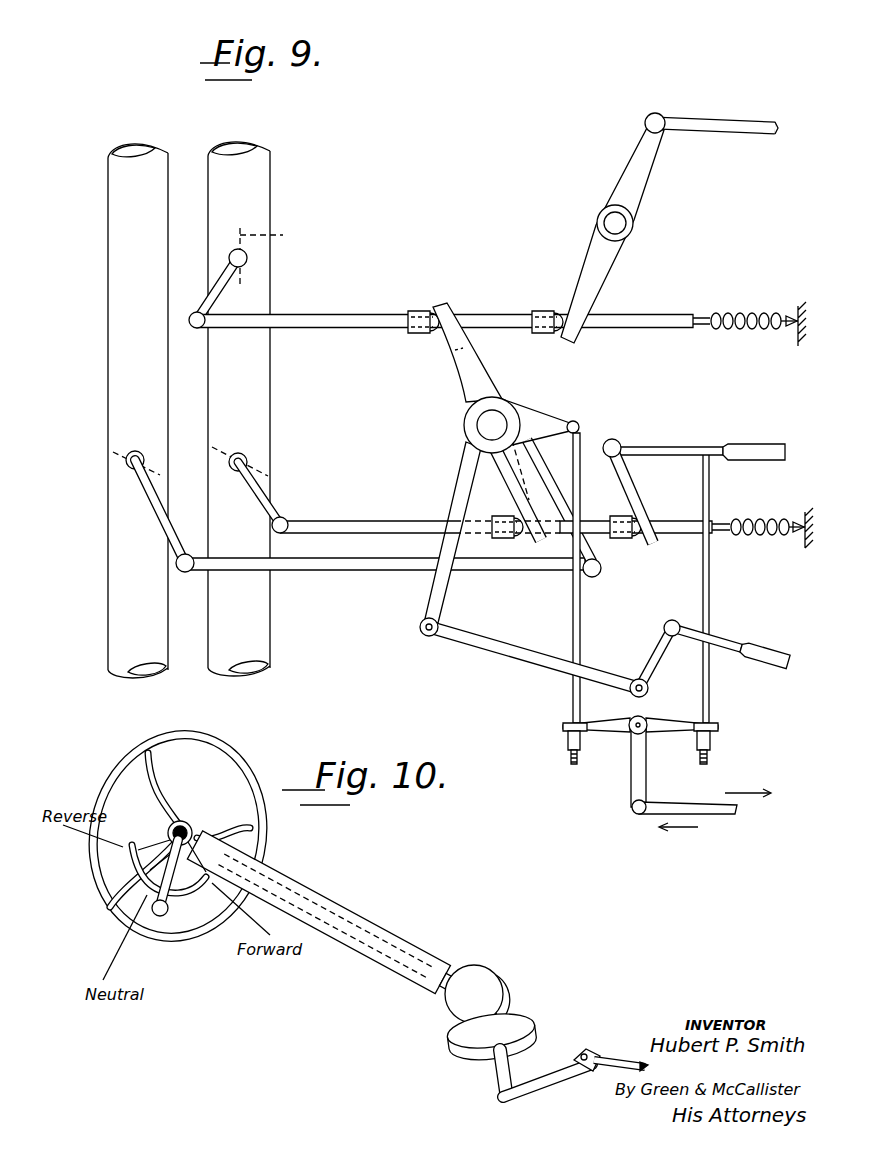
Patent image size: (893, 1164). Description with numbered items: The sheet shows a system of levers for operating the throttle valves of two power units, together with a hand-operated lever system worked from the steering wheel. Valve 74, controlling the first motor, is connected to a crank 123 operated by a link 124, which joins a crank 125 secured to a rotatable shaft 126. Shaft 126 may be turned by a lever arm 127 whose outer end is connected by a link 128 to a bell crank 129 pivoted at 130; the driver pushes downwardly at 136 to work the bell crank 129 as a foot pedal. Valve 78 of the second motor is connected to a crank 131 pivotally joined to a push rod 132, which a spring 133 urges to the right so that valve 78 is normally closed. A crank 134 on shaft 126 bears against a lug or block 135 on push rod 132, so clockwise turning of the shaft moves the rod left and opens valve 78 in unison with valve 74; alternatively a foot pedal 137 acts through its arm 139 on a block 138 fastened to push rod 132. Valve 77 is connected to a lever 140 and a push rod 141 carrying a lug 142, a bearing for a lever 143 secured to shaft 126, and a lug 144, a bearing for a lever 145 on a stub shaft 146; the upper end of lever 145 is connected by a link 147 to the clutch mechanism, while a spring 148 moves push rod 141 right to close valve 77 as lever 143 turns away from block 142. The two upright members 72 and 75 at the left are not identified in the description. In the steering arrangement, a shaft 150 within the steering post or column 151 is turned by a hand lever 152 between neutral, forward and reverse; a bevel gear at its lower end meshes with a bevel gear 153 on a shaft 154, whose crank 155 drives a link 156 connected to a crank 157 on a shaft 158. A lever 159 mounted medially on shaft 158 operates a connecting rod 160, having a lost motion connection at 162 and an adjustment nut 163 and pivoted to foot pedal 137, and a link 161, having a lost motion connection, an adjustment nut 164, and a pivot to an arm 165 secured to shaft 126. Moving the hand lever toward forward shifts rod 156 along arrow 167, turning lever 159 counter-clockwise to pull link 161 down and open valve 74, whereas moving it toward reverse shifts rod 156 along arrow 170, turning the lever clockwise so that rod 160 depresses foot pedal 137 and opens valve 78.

In FIG. 9, the left column 72 is at (107, 582).
In FIG. 9, the valve 74 is at (120, 452).
In FIG. 9, the right column 75 is at (272, 198).
In FIG. 9, the valve 77 is at (277, 258).
In FIG. 9, the valve 78 is at (248, 459).
In FIG. 9, the crank 123 is at (177, 538).
In FIG. 9, the link 124 is at (357, 569).
In FIG. 9, the crank 125 is at (587, 549).
In FIG. 9, the rotatable shaft 126 is at (496, 422).
In FIG. 9, the lever arm 127 is at (470, 487).
In FIG. 9, the link 128 is at (510, 653).
In FIG. 9, the bell crank 129 is at (646, 657).
In FIG. 9, the pivot 130 is at (678, 611).
In FIG. 9, the crank 131 is at (274, 508).
In FIG. 9, the push rod 132 is at (373, 522).
In FIG. 9, the spring 133 is at (770, 510).
In FIG. 9, the crank 134 is at (543, 537).
In FIG. 9, the lug or block 135 is at (520, 513).
In FIG. 9, the pressing point on bell crank 136 is at (790, 650).
In FIG. 9, the foot pedal 137 is at (686, 446).
In FIG. 9, the block or lug 138 is at (622, 517).
In FIG. 9, the arm 139 is at (635, 498).
In FIG. 9, the lever 140 is at (210, 305).
In FIG. 9, the push rod 141 is at (347, 316).
In FIG. 9, the lug 142 is at (419, 311).
In FIG. 9, the lever 143 is at (462, 368).
In FIG. 9, the lug 144 is at (545, 298).
In FIG. 9, the lever 145 is at (597, 246).
In FIG. 9, the stub shaft 146 is at (622, 226).
In FIG. 9, the link 147 is at (720, 122).
In FIG. 9, the spring 148 is at (758, 335).
In FIG. 10, the shaft 150 is at (448, 978).
In FIG. 10, the steering post or column 151 is at (353, 908).
In FIG. 10, the hand lever 152 is at (175, 908).
In FIG. 10, the bevel gear 153 is at (530, 1023).
In FIG. 10, the shaft 154 is at (502, 1068).
In FIG. 10, the crank 155 is at (548, 1090).
In FIG. 9, the link 156 is at (718, 812).
In FIG. 10, the link 156 is at (623, 1067).
In FIG. 9, the crank 157 is at (632, 788).
In FIG. 9, the shaft 158 is at (647, 718).
In FIG. 9, the lever 159 is at (619, 723).
In FIG. 9, the connecting rod 160 is at (710, 680).
In FIG. 9, the link 161 is at (569, 698).
In FIG. 9, the lost motion connection 162 is at (717, 722).
In FIG. 9, the adjustment nut 163 is at (715, 745).
In FIG. 9, the adjustment nut 164 is at (567, 745).
In FIG. 9, the arm 165 is at (557, 420).
In FIG. 9, the arrow 167 is at (755, 788).
In FIG. 9, the arrow 170 is at (674, 834).